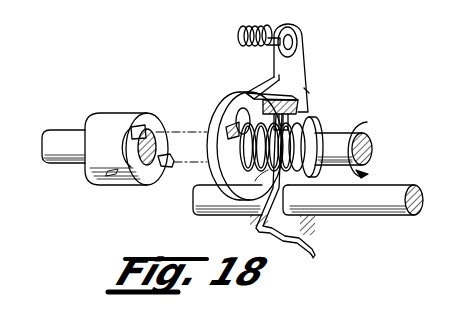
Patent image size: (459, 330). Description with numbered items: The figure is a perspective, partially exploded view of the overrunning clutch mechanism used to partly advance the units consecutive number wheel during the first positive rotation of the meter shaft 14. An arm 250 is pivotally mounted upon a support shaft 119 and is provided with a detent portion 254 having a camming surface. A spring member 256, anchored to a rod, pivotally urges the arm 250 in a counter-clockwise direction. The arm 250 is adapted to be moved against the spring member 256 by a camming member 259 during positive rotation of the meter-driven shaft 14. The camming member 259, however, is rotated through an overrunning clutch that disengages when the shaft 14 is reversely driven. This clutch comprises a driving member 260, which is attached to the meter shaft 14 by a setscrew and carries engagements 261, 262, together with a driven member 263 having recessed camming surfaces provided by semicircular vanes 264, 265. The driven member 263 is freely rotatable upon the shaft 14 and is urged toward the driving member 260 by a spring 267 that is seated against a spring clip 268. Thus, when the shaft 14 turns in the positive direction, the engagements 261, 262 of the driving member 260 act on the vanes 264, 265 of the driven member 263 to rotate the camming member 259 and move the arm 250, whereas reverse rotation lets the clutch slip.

The meter shaft 14 is at (67, 136).
The support shaft 119 is at (353, 206).
The arm 250 is at (305, 64).
The detent portion 254 is at (254, 86).
The spring member 256 is at (265, 25).
The camming member 259 is at (305, 89).
The driving member 260 is at (112, 118).
The engagement 261 is at (165, 100).
The engagement 262 is at (171, 168).
The driven member 263 is at (240, 99).
The semicircular vane 264 is at (232, 124).
The semicircular vane 265 is at (255, 217).
The spring 267 is at (293, 125).
The spring clip 268 is at (321, 128).